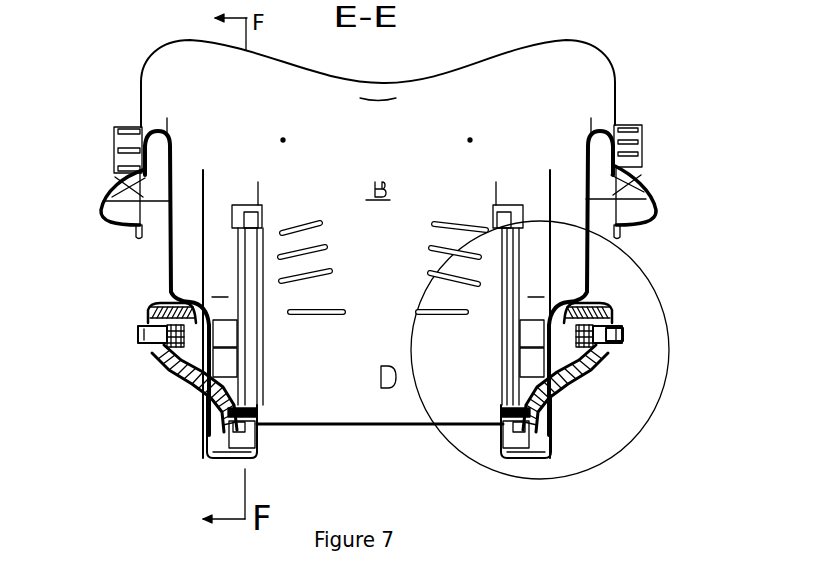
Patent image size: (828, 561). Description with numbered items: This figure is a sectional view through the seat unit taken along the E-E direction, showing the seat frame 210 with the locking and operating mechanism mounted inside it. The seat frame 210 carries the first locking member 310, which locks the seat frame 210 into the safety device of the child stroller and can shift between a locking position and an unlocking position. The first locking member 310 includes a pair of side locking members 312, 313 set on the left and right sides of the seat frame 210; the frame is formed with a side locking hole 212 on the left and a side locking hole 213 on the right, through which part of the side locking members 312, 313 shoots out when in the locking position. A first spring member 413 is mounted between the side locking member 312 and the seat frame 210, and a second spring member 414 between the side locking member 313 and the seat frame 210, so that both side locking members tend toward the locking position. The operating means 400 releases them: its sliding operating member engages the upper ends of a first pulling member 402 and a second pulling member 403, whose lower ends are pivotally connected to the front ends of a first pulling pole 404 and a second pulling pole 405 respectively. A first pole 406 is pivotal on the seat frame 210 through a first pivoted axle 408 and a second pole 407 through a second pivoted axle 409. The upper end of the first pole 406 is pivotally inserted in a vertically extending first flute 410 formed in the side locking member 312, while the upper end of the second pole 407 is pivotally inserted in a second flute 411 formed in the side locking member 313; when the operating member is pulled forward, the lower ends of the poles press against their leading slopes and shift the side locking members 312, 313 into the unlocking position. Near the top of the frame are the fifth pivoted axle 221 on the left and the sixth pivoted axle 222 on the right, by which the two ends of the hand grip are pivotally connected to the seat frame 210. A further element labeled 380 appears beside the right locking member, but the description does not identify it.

The seat frame 210 is at (462, 91).
The fifth pivoted axle 221 is at (113, 183).
The sixth pivoted axle 222 is at (650, 181).
The side locking hole 212 is at (149, 355).
The side locking hole 213 is at (612, 353).
The operating means 400 is at (226, 263).
The first pulling member 402 is at (240, 290).
The second pulling member 403 is at (512, 259).
The side locking member 312 is at (148, 320).
The side locking member 313 is at (620, 320).
The first locking member 310 is at (120, 334).
The stud 380 is at (645, 333).
The first flute 410 is at (140, 341).
The second flute 411 is at (634, 335).
The first spring member 413 is at (193, 386).
The second pole 407 is at (552, 390).
The first pole 406 is at (198, 398).
The first pulling pole 404 is at (254, 438).
The first pivoted axle 408 is at (207, 462).
The second pulling pole 405 is at (506, 447).
The second pivoted axle 409 is at (572, 450).
The second spring member 414 is at (595, 384).